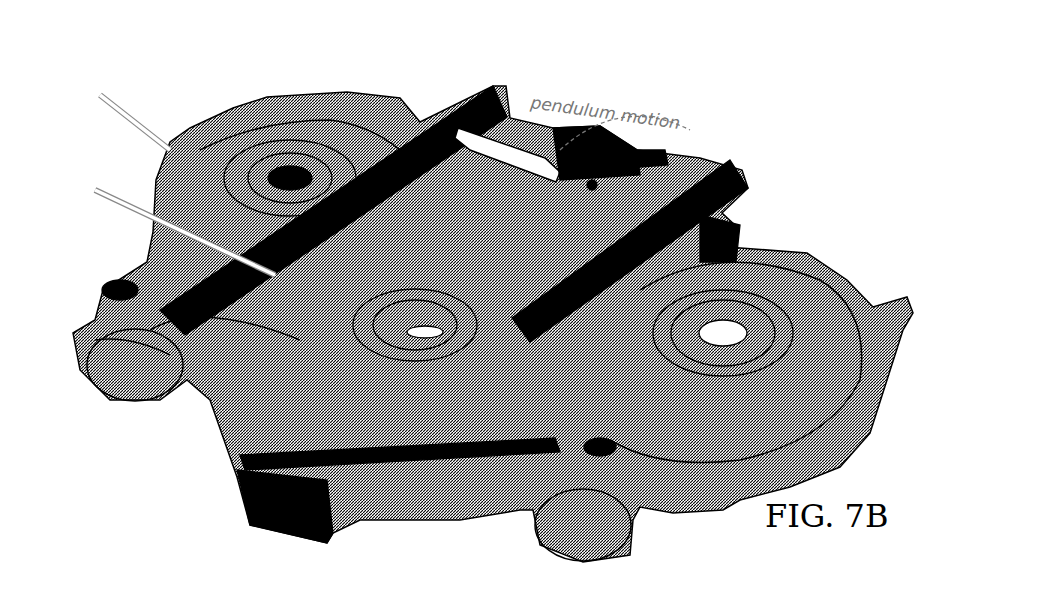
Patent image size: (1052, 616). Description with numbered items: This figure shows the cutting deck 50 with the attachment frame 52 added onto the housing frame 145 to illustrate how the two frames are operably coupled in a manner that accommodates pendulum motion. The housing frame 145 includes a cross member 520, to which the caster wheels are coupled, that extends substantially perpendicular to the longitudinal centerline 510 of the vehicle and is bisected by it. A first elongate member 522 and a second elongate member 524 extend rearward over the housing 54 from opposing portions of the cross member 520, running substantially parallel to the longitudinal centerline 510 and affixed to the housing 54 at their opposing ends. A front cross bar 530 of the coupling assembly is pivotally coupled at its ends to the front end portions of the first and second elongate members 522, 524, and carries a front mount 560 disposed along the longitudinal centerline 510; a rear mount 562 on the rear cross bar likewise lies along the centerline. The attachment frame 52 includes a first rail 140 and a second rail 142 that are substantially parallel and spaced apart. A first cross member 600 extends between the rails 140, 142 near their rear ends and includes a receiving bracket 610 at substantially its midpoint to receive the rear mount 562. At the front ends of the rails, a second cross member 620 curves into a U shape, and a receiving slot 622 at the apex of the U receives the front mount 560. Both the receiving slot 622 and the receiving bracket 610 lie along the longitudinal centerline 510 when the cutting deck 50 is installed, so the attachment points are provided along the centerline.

The cutting deck 50 is at (217, 453).
The attachment frame 52 is at (745, 178).
The housing 54 is at (100, 94).
The first rail 140 is at (450, 100).
The second rail 142 is at (713, 163).
The housing frame 145 is at (170, 290).
The longitudinal centerline 510 is at (607, 157).
The cross member 520 is at (443, 487).
The first elongate member 522 is at (313, 163).
The second elongate member 524 is at (727, 240).
The front cross bar 530 is at (300, 320).
The front mount 560 is at (370, 353).
The rear mount 562 is at (590, 187).
The first cross member 600 is at (520, 130).
The receiving bracket 610 is at (640, 153).
The second cross member 620 is at (100, 190).
The receiving slot 622 is at (377, 343).